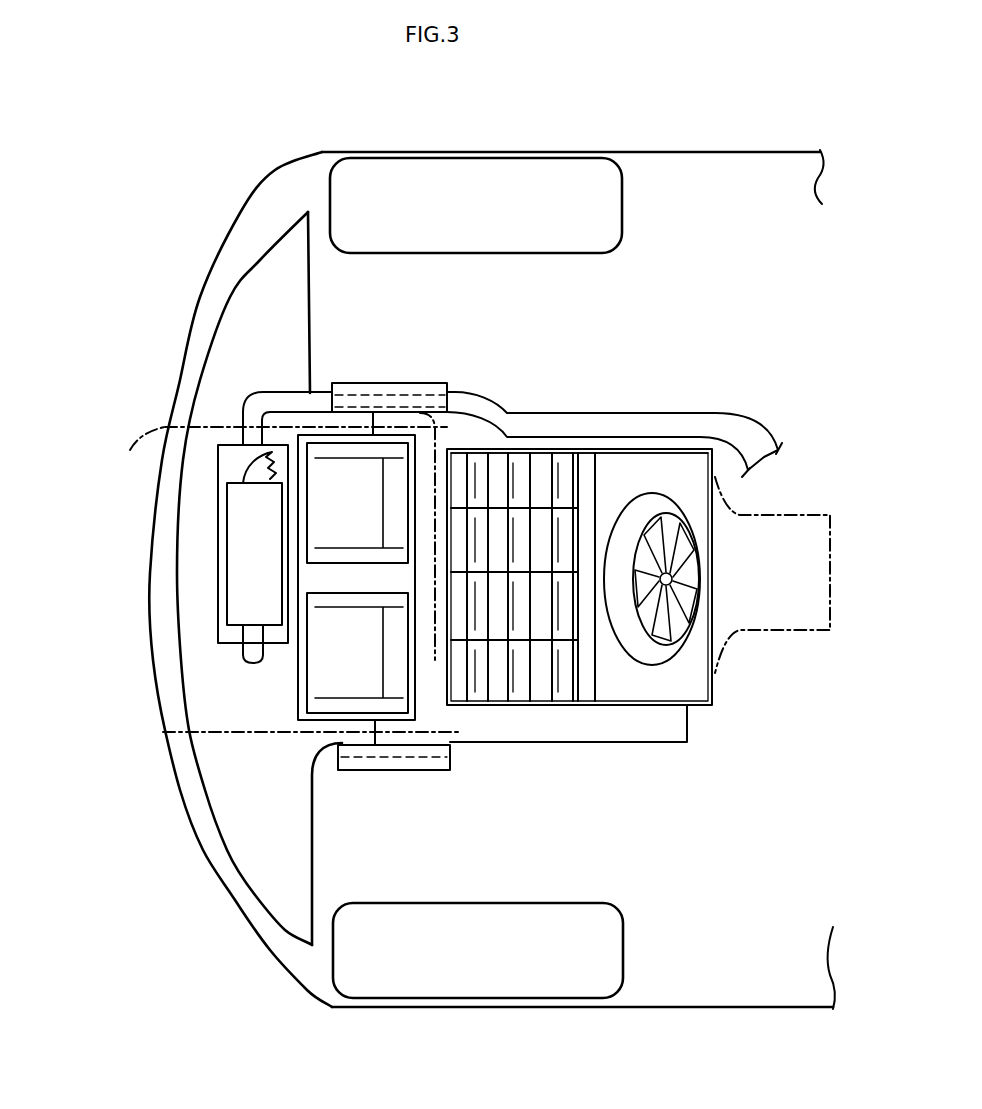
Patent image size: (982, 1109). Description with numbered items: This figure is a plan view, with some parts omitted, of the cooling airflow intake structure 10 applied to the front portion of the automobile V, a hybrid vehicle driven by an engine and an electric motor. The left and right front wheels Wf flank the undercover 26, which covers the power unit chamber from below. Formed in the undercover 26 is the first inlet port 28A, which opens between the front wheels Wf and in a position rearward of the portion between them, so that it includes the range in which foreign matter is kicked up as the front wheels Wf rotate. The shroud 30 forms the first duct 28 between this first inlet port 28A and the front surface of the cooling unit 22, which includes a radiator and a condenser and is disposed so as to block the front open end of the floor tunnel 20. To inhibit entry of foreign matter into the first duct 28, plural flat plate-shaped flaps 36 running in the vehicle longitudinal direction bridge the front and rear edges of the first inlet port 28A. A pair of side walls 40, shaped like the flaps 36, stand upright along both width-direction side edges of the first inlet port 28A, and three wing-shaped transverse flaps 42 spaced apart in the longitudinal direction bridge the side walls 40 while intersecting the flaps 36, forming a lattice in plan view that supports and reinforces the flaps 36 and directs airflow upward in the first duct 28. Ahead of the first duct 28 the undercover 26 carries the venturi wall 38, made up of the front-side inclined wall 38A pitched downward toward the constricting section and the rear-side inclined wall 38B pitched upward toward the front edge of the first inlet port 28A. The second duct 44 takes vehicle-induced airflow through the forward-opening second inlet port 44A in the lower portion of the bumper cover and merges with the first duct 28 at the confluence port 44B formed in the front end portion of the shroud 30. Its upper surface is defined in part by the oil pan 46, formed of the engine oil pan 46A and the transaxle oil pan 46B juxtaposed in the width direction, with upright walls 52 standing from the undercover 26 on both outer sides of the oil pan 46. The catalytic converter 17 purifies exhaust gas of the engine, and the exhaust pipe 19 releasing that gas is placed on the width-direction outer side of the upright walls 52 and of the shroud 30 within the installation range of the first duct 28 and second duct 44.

The cooling airflow intake structure 10 is at (613, 570).
The catalytic converter 17 is at (237, 593).
The exhaust pipe 19 is at (610, 447).
The floor tunnel 20 is at (780, 637).
The cooling unit 22 is at (610, 703).
The undercover 26 is at (316, 342).
The first duct 28 is at (545, 582).
The first inlet port 28A is at (573, 703).
The shroud 30 is at (570, 703).
The flaps 36 is at (575, 590).
The venturi wall 38 is at (205, 579).
The front-side inclined wall 38A is at (222, 712).
The rear-side inclined wall 38B is at (250, 800).
The side walls 40 is at (560, 462).
The transverse flaps 42 is at (517, 462).
The second duct 44 is at (274, 553).
The second inlet port 44A is at (136, 492).
The confluence port 44B is at (420, 738).
The oil pan 46 is at (222, 578).
The oil pan 46A is at (315, 503).
The oil pan 46B is at (348, 618).
The upright walls 52 is at (413, 408).
The automobile V is at (722, 147).
The front wheels Wf is at (503, 178).